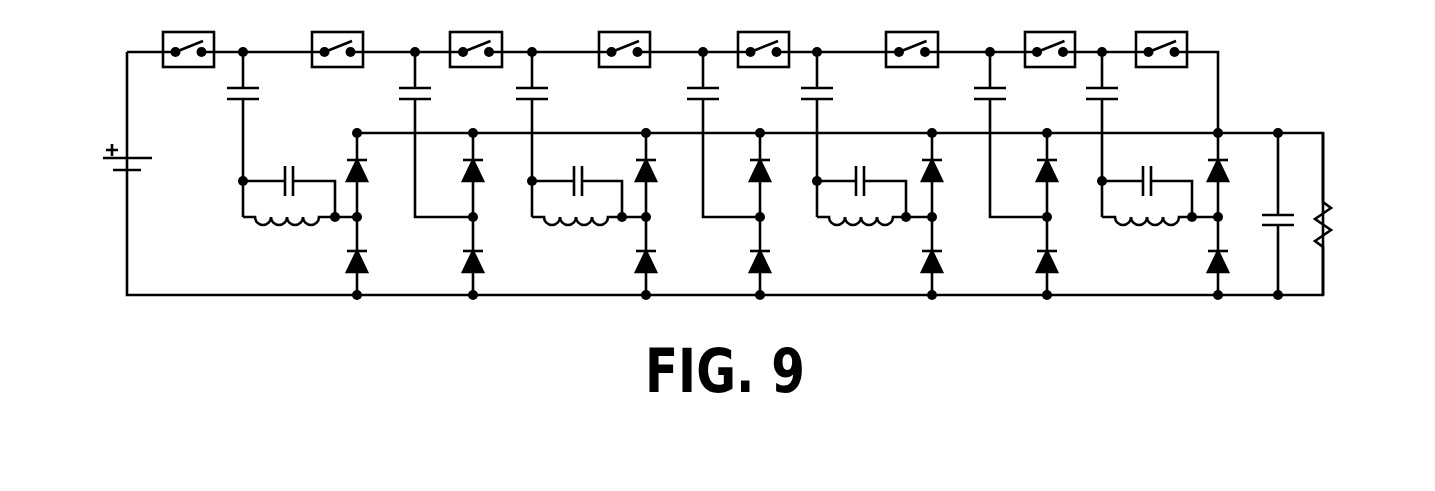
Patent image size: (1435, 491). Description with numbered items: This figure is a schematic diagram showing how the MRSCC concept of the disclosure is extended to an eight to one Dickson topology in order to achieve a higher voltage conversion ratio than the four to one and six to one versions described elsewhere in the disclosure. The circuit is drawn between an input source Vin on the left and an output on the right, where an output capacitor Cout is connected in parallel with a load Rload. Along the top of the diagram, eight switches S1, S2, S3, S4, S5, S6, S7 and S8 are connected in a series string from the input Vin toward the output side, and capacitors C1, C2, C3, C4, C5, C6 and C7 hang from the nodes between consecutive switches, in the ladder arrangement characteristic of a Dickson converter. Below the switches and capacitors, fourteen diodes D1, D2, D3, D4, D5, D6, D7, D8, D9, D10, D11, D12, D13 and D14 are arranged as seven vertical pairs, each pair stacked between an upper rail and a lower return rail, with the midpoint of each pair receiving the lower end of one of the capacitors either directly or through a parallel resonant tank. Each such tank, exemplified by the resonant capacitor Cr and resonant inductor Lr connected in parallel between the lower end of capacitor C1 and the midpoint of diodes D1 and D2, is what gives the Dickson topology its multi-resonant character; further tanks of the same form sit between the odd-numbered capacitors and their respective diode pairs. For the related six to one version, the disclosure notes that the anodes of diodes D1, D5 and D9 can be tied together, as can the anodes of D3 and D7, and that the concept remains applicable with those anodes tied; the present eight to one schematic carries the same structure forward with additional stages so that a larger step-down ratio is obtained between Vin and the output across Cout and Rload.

The input voltage source Vin is at (134, 169).
The switch S1 is at (188, 40).
The switch S2 is at (337, 40).
The switch S3 is at (476, 40).
The switch S4 is at (624, 40).
The switch S5 is at (763, 40).
The switch S6 is at (912, 40).
The switch S7 is at (1050, 40).
The switch S8 is at (1161, 40).
The flying capacitor C1 is at (231, 134).
The flying capacitor C2 is at (424, 134).
The flying capacitor C3 is at (520, 134).
The flying capacitor C4 is at (712, 134).
The flying capacitor C5 is at (805, 134).
The flying capacitor C6 is at (999, 134).
The flying capacitor C7 is at (1090, 134).
The resonant capacitor Cr is at (286, 181).
The resonant inductor Lr is at (300, 230).
The diode D1 is at (371, 168).
The diode D2 is at (371, 261).
The diode D3 is at (487, 168).
The diode D4 is at (487, 261).
The diode D5 is at (660, 168).
The diode D6 is at (660, 261).
The diode D7 is at (774, 168).
The diode D8 is at (774, 261).
The diode D9 is at (946, 168).
The diode D10 is at (951, 261).
The diode D11 is at (1065, 168).
The diode D12 is at (1065, 261).
The diode D13 is at (1237, 168).
The diode D14 is at (1237, 261).
The output capacitor Cout is at (1261, 214).
The load resistor Rload is at (1346, 214).